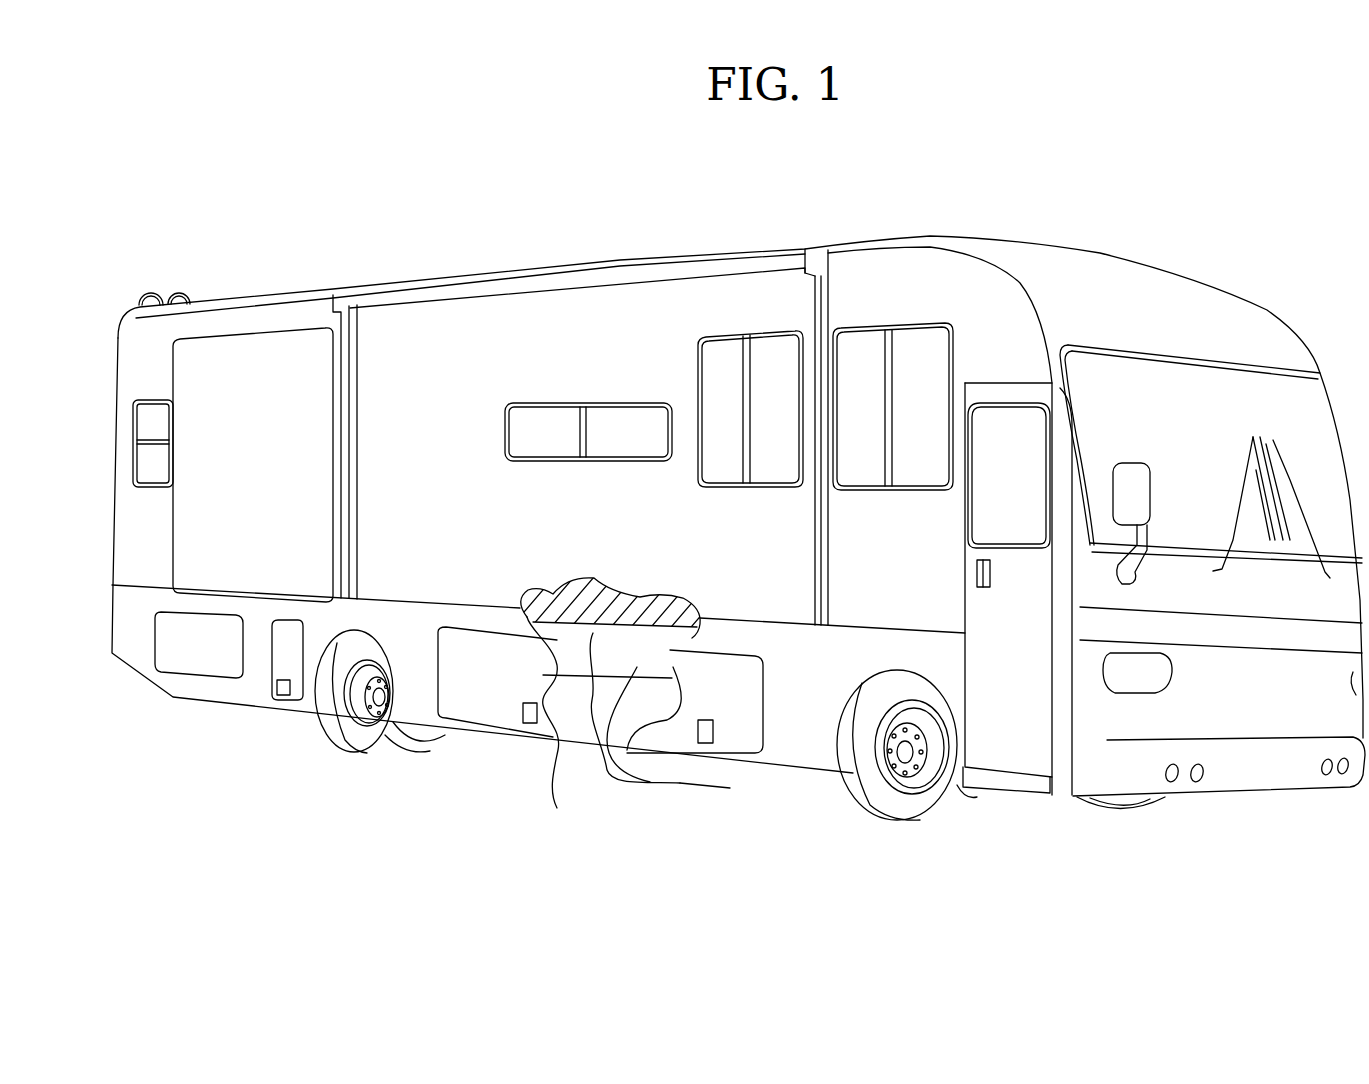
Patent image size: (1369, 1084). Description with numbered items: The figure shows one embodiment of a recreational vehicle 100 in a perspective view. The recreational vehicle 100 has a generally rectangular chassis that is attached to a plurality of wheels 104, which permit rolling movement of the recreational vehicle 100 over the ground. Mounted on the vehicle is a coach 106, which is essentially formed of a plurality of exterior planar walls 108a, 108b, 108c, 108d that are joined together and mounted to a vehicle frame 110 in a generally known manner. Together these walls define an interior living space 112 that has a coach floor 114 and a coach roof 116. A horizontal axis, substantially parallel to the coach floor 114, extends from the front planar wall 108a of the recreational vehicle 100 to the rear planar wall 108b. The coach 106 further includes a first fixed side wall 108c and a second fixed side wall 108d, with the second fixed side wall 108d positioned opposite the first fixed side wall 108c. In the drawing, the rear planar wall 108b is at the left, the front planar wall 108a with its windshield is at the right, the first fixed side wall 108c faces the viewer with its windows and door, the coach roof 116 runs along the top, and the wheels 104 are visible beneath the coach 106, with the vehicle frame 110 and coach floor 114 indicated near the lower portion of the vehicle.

The recreational vehicle 100 is at (1156, 212).
The wheels 104 is at (357, 740).
The coach 106 is at (540, 325).
The front planar wall 108a is at (1247, 708).
The rear planar wall 108b is at (108, 533).
The first fixed side wall 108c is at (758, 300).
The second fixed side wall 108d is at (1264, 305).
The vehicle frame 110 is at (730, 788).
The interior living space 112 is at (389, 388).
The coach floor 114 is at (600, 710).
The coach roof 116 is at (647, 258).